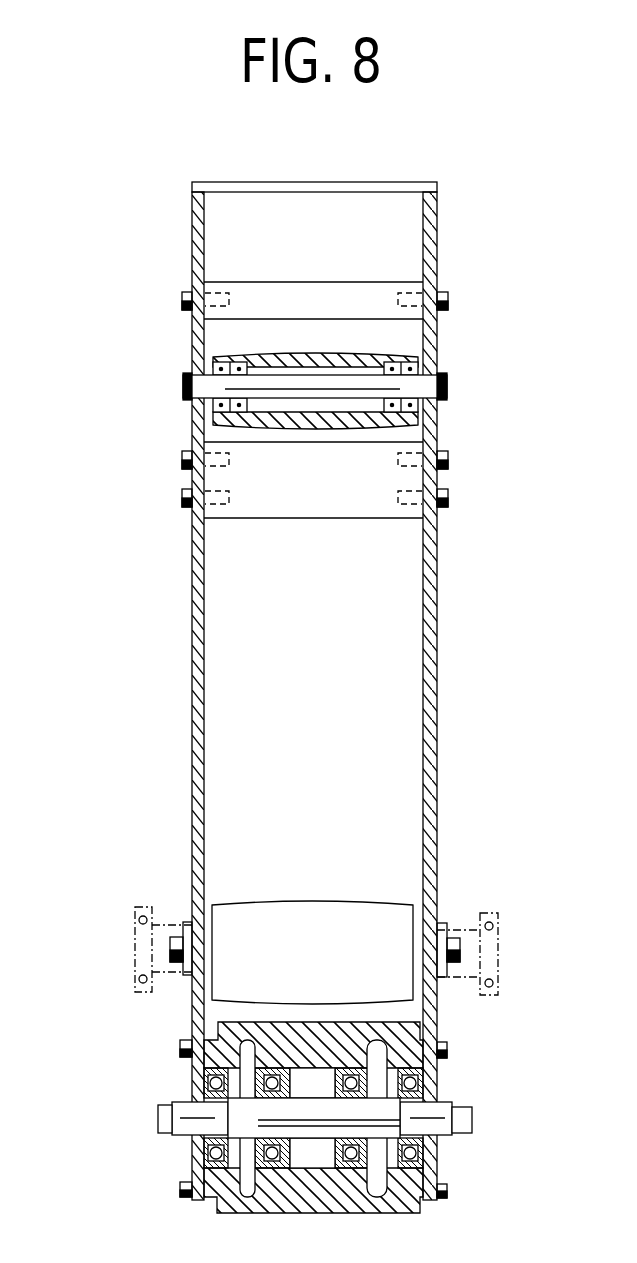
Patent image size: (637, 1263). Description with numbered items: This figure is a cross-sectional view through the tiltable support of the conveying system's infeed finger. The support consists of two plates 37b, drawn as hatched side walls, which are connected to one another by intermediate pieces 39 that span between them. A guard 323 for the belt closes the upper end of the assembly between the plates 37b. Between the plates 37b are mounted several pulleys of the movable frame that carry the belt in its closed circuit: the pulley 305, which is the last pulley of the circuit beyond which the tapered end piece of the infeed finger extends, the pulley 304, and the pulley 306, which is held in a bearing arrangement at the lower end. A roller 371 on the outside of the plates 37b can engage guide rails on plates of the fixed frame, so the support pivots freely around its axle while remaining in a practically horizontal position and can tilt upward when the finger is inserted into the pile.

The guard 323 is at (258, 190).
The intermediate pieces 39 is at (255, 297).
The pulley 305 is at (267, 363).
The plates 37b is at (200, 617).
The pulley 304 is at (258, 913).
The roller 371 is at (138, 912).
The pulley 306 is at (237, 1030).